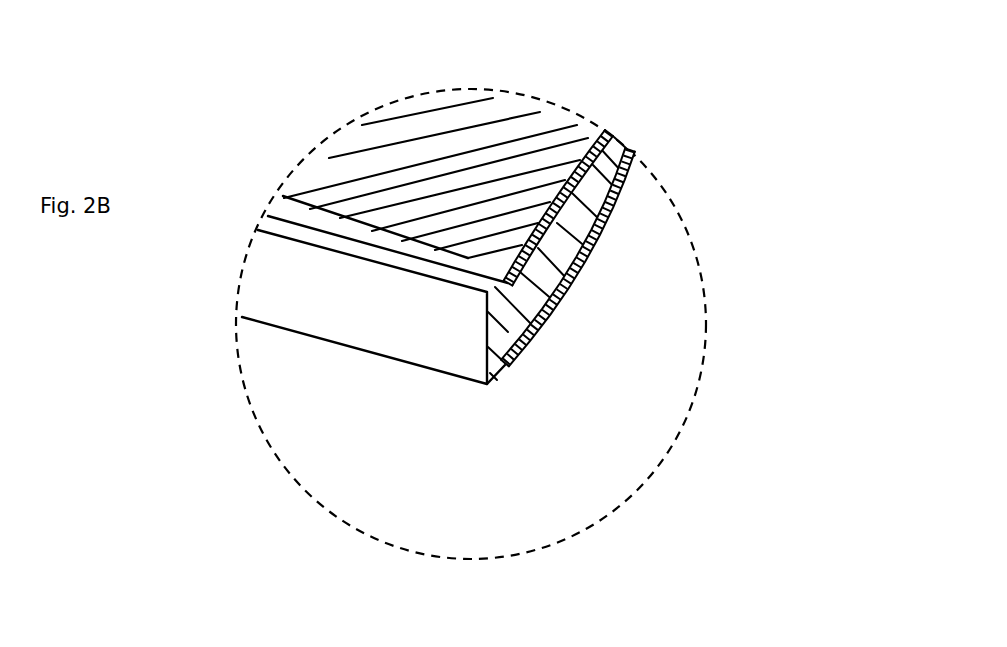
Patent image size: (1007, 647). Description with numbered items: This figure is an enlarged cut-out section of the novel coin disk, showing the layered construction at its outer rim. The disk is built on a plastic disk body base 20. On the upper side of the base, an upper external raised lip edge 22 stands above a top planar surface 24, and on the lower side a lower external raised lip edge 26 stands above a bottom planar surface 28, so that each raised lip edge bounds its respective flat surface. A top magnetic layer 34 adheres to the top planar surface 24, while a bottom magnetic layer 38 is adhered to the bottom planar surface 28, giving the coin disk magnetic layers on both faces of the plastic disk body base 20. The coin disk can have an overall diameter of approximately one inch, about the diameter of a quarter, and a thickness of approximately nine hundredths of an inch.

The disk body base 20 is at (327, 341).
The upper external raised lip edge 22 is at (297, 233).
The top planar surface 24 is at (632, 156).
The lower external raised lip edge 26 is at (489, 386).
The bottom planar surface 28 is at (515, 335).
The top magnetic layer 34 is at (527, 145).
The bottom magnetic layer 38 is at (570, 290).